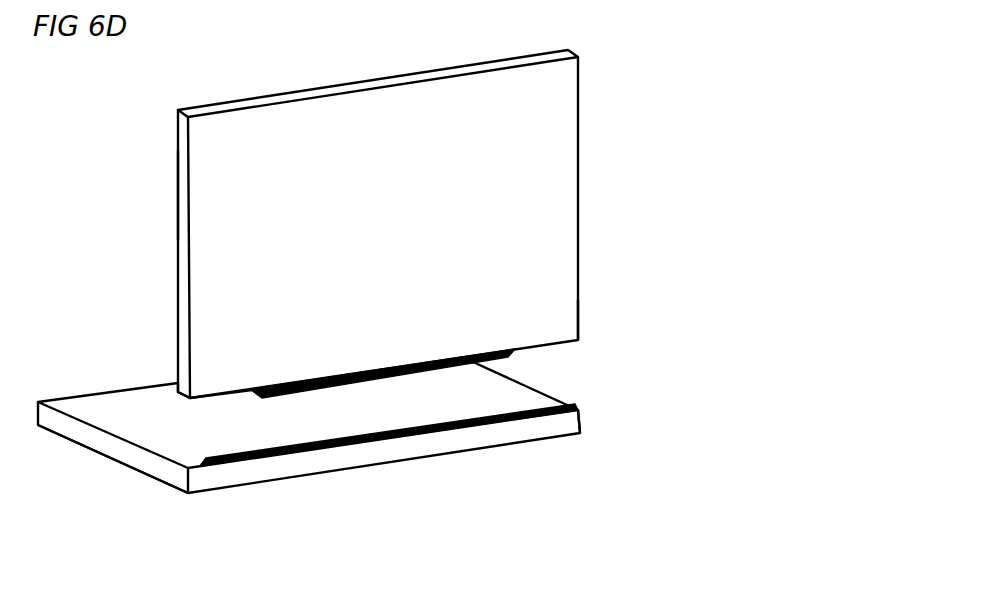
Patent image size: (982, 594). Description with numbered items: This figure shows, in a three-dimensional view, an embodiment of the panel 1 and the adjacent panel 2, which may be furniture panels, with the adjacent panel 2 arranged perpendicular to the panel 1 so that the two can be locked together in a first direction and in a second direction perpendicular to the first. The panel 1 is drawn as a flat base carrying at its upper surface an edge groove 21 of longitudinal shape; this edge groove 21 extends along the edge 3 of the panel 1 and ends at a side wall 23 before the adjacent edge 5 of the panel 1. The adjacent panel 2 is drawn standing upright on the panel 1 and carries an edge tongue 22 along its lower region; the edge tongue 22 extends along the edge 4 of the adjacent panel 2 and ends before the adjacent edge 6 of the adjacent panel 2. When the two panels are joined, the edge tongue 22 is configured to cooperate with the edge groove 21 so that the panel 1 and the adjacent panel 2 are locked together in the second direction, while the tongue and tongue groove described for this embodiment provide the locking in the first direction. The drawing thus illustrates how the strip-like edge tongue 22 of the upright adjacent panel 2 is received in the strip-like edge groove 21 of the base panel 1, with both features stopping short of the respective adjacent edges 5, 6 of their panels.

The panel 1 is at (125, 408).
The adjacent panel 2 is at (300, 138).
The edge of the panel 3 is at (558, 430).
The edge of the adjacent panel 4 is at (545, 333).
The adjacent edge of the panel 5 is at (162, 472).
The adjacent edge of the adjacent panel 6 is at (181, 194).
The edge groove 21 is at (266, 449).
The edge tongue 22 is at (277, 395).
The side wall 23 is at (202, 463).